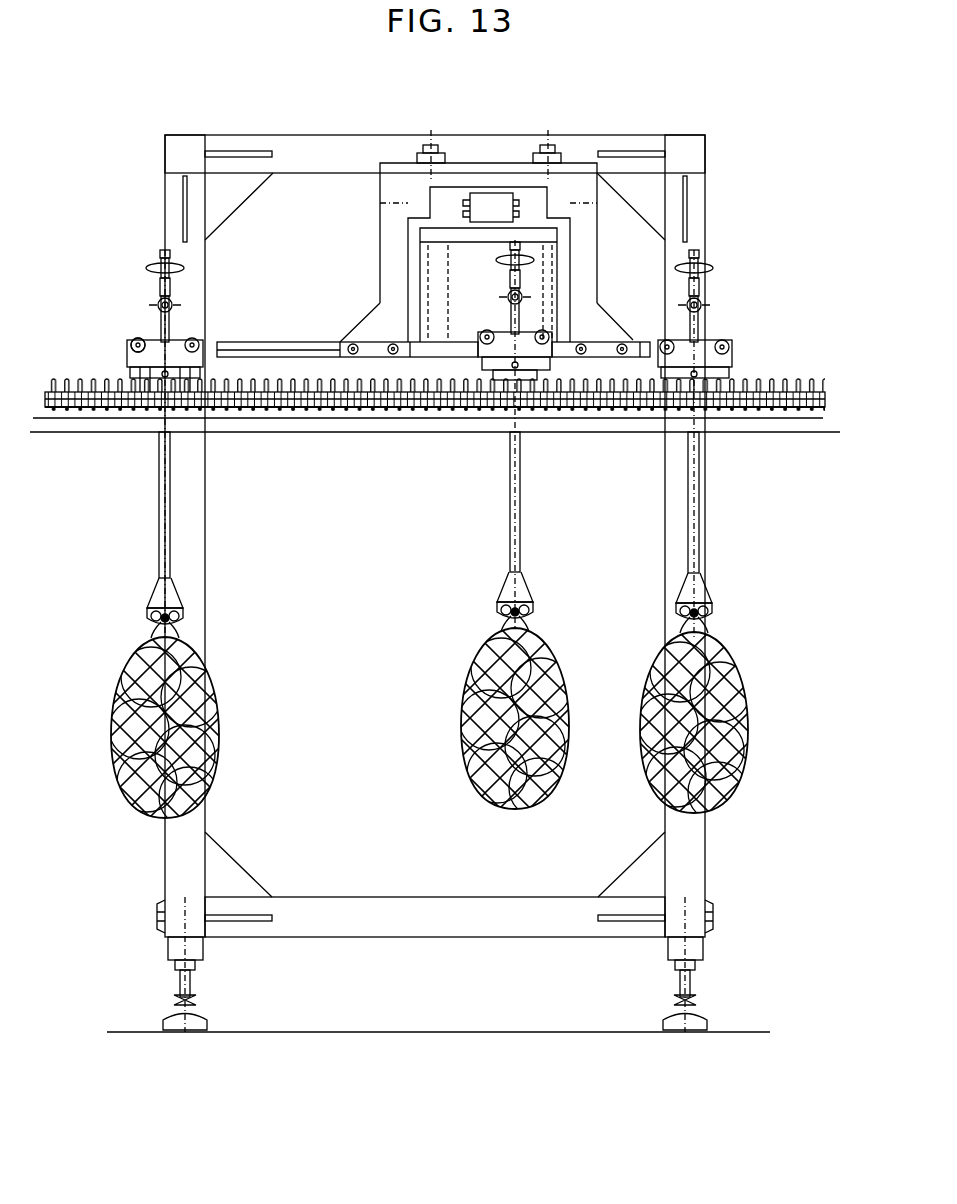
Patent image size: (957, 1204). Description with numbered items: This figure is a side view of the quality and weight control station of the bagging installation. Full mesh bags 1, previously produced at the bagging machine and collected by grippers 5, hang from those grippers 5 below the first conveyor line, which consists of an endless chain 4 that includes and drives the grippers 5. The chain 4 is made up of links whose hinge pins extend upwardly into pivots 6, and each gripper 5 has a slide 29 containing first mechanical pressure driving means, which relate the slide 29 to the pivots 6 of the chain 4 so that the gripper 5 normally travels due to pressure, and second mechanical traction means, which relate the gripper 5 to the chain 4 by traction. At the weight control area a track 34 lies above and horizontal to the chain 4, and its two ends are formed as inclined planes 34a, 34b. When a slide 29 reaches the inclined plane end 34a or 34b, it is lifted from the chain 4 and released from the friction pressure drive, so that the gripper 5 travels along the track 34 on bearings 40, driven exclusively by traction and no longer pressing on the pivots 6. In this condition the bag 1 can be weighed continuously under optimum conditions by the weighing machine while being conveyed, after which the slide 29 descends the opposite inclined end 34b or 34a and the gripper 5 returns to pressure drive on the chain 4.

The mesh bag 1 is at (468, 732).
The endless chain 4 is at (762, 393).
The gripper 5 is at (158, 540).
The pivot 6 is at (155, 382).
The slide 29 is at (142, 360).
The track 34 is at (437, 352).
The inclined plane end 34a is at (288, 352).
The inclined plane end 34b is at (598, 358).
The bearing 40 is at (138, 343).